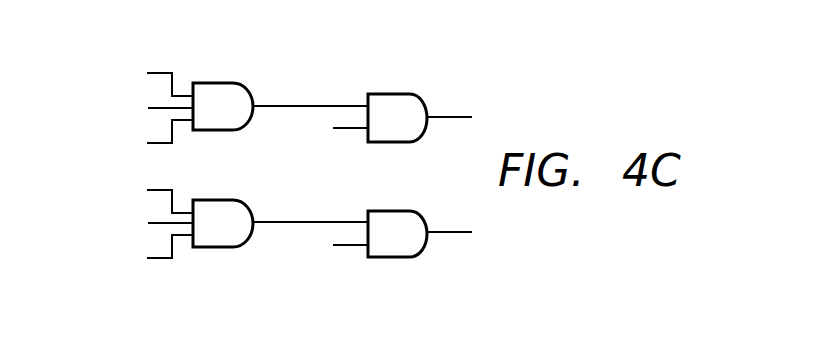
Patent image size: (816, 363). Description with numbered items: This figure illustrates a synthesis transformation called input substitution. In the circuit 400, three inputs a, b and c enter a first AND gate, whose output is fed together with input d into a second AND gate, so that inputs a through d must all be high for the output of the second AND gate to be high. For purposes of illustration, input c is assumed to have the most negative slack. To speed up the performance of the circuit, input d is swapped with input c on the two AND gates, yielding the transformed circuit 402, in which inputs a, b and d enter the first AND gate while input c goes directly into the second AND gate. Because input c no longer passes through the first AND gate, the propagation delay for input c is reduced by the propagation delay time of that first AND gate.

The circuit 400 is at (89, 121).
The transformed circuit 402 is at (89, 237).